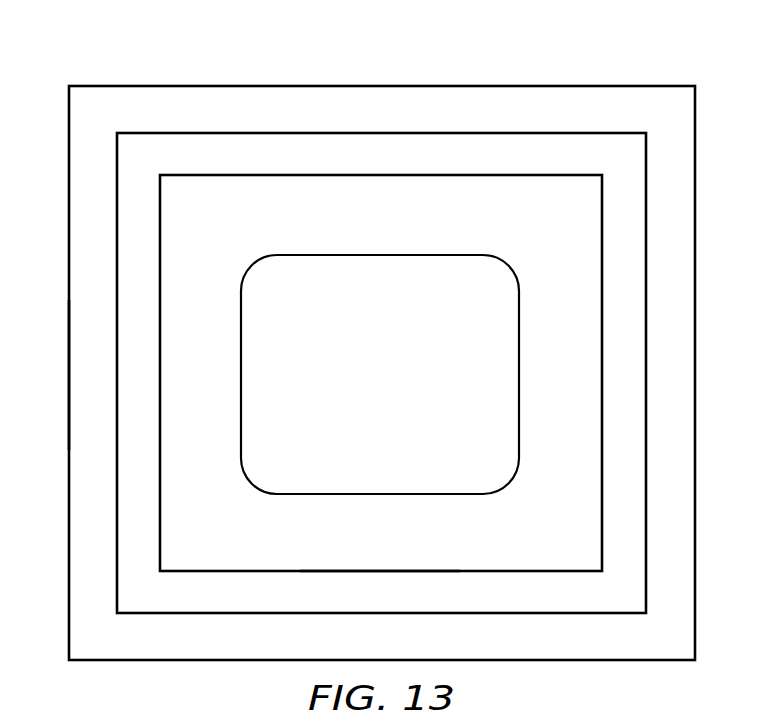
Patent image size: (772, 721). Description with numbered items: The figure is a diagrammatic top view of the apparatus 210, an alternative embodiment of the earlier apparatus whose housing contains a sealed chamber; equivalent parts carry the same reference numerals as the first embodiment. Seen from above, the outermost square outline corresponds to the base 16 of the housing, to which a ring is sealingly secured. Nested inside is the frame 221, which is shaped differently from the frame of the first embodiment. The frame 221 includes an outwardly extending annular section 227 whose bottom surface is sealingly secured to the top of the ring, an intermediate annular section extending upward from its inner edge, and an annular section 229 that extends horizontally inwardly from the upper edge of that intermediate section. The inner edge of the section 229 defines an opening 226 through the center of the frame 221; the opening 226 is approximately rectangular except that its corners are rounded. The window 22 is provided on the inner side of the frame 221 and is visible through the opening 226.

The apparatus 210 is at (665, 60).
The frame 221 is at (645, 257).
The annular section 227 is at (635, 373).
The base 16 is at (79, 372).
The window 22 is at (395, 384).
The opening 226 is at (379, 493).
The annular section 229 is at (403, 546).